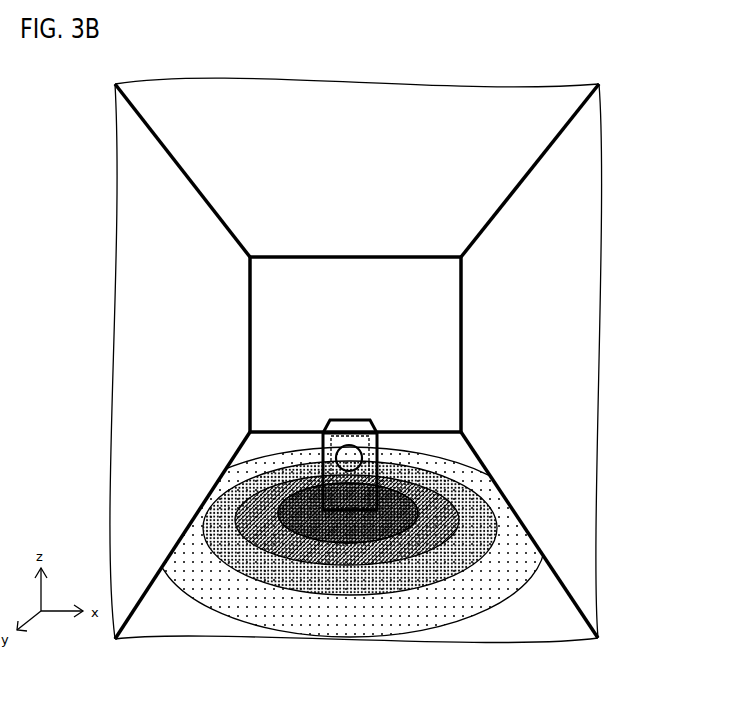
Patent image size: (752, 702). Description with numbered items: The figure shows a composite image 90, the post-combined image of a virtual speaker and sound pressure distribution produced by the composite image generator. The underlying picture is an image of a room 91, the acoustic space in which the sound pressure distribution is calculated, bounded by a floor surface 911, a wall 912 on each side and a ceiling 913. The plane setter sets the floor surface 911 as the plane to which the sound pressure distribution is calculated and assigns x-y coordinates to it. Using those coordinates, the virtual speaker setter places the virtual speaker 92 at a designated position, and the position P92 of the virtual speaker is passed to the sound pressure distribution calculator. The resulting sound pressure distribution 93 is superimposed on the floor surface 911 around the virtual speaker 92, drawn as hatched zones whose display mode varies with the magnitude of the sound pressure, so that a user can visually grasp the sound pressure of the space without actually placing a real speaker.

The composite image 90 is at (649, 58).
The room 91 is at (579, 157).
The floor surface 911 is at (524, 633).
The wall 912 is at (132, 237).
The ceiling 913 is at (298, 90).
The virtual speaker 92 is at (386, 440).
The position of the virtual speaker P92 is at (459, 494).
The sound pressure distribution 93 is at (320, 623).